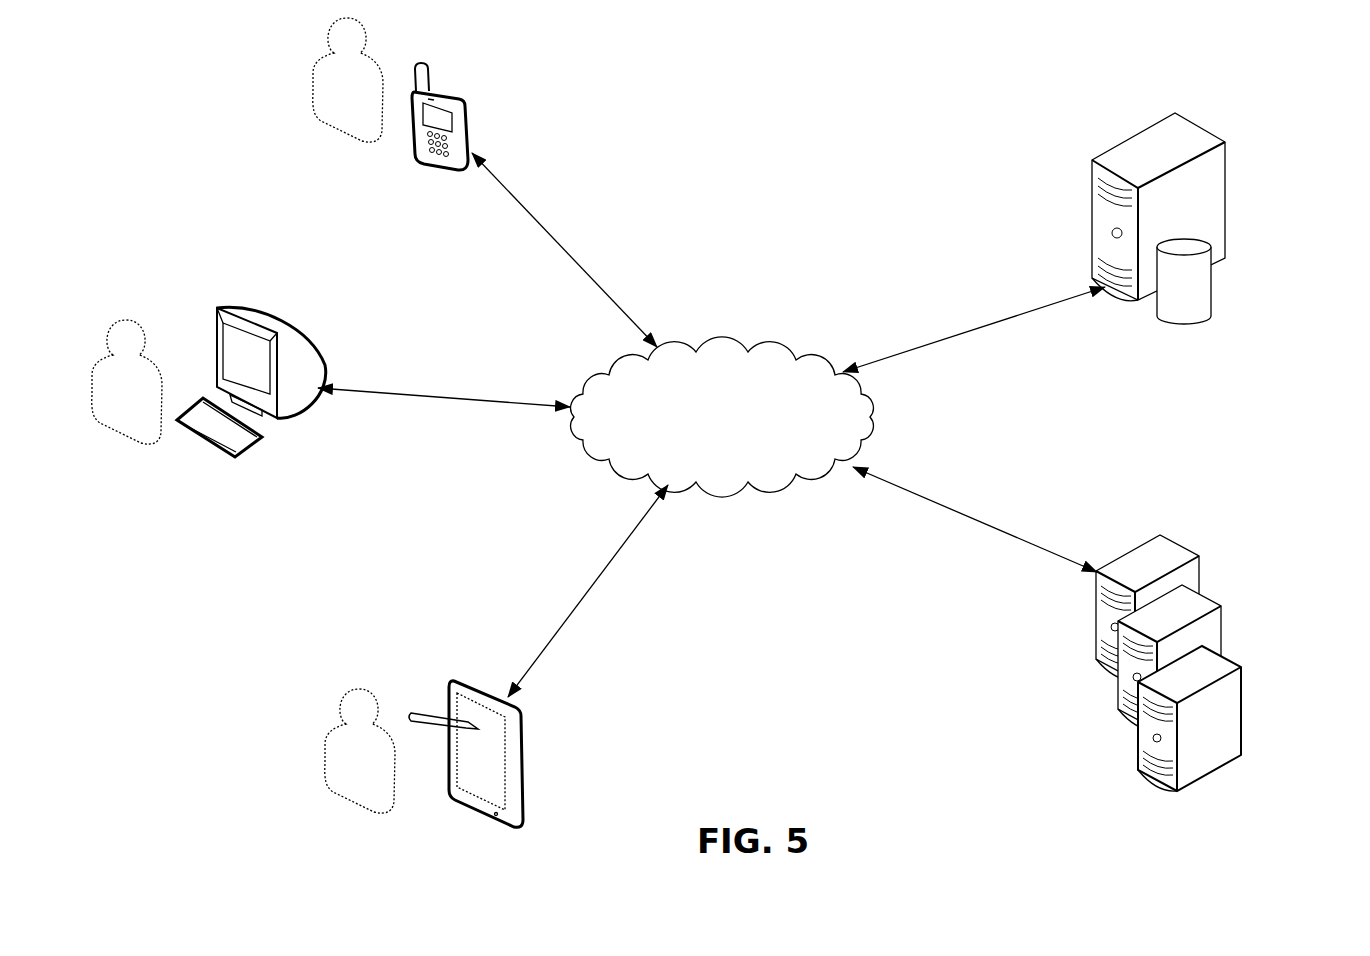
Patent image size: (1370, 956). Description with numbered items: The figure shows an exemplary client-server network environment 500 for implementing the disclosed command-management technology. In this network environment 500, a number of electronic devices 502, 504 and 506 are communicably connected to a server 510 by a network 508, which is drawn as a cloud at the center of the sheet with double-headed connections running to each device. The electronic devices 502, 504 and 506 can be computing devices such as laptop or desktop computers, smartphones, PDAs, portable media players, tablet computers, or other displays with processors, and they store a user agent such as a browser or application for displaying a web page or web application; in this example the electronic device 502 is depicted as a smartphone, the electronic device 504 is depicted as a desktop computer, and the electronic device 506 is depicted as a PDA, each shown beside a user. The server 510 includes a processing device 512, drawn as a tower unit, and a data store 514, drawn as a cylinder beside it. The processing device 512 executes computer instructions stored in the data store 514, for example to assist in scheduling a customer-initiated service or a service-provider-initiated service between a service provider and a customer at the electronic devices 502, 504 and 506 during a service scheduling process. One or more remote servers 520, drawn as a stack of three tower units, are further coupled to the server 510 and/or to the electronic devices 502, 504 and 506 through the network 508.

The network environment 500 is at (849, 78).
The electronic device 502 is at (450, 93).
The electronic device 504 is at (325, 383).
The electronic device 506 is at (461, 678).
The network 508 is at (725, 343).
The server 510 is at (1097, 320).
The processing device 512 is at (1198, 125).
The data store 514 is at (1212, 315).
The remote servers 520 is at (1092, 752).